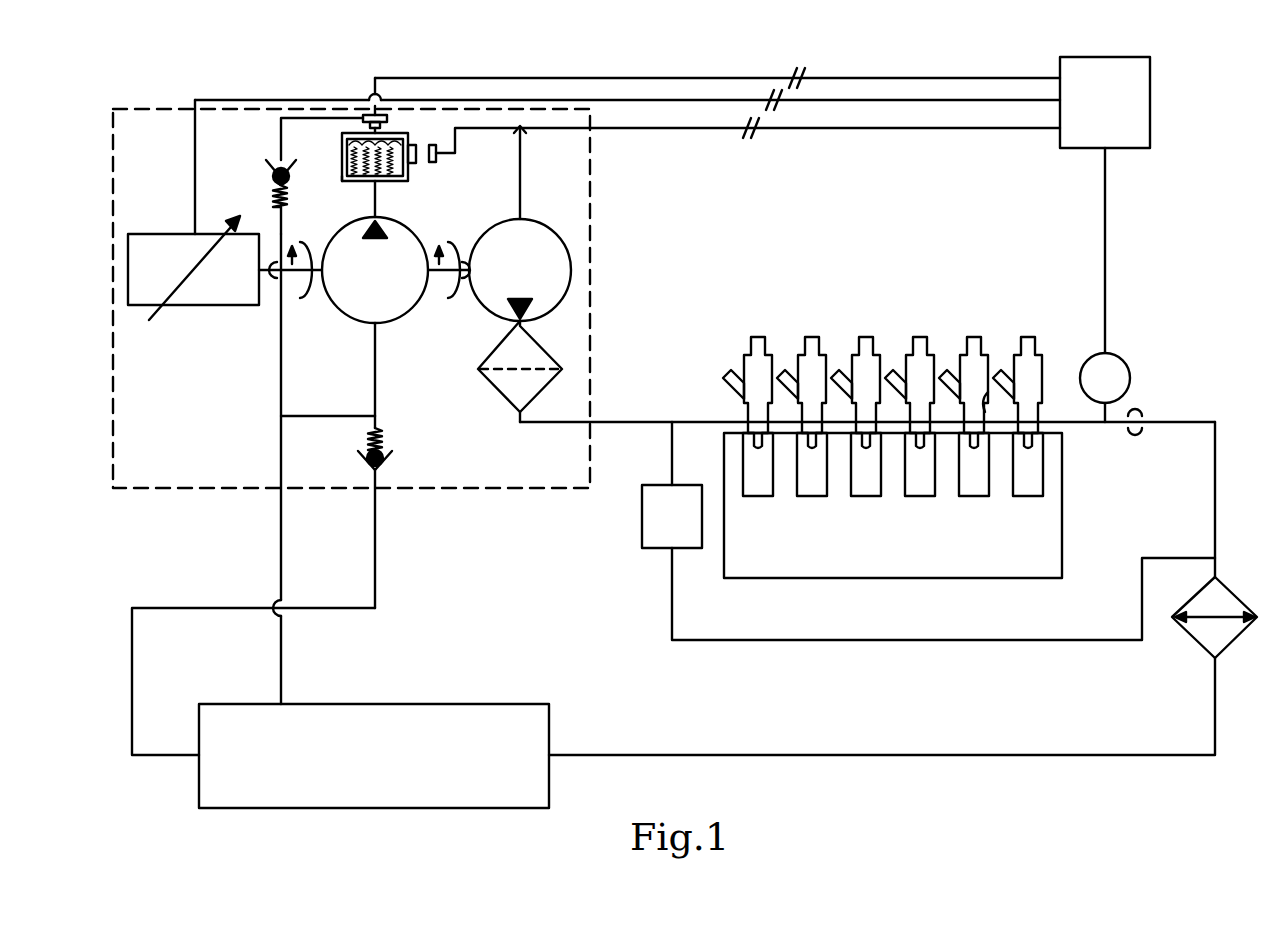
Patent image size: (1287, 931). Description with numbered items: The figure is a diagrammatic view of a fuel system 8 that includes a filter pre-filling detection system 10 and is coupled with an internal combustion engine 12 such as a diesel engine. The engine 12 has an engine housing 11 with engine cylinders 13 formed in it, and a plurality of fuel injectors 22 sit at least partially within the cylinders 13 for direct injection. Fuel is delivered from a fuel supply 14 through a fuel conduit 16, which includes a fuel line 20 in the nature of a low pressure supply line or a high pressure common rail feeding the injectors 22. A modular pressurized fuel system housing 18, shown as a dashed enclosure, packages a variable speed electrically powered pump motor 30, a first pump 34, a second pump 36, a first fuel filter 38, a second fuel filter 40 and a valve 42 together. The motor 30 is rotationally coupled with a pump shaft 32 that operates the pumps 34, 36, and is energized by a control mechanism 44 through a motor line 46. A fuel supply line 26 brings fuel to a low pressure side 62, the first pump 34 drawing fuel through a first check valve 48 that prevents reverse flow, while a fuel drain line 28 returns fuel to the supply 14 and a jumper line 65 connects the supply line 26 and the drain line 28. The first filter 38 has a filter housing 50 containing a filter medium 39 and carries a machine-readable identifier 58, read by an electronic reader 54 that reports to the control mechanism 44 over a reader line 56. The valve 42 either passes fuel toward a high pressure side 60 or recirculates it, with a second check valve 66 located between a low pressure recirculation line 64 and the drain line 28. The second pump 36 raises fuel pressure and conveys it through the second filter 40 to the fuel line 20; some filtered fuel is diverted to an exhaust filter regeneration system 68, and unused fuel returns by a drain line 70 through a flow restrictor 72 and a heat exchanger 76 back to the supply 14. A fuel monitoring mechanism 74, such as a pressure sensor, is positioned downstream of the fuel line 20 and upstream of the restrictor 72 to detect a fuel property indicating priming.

The fuel system 8 is at (960, 50).
The filter pre-filling detection system 10 is at (1160, 321).
The engine housing 11 is at (1062, 502).
The internal combustion engine 12 is at (730, 384).
The engine cylinders 13 is at (1045, 462).
The fuel supply 14 is at (490, 704).
The fuel conduit 16 is at (665, 410).
The modular pressurized fuel system housing 18 is at (112, 455).
The fuel line 20 is at (985, 412).
The fuel injectors 22 is at (805, 338).
The fuel supply line 26 is at (132, 672).
The fuel drain line 28 is at (281, 527).
The pump motor 30 is at (188, 305).
The pump shaft 32 is at (460, 282).
The first pump 34 is at (338, 305).
The second pump 36 is at (555, 228).
The first fuel filter 38 is at (342, 165).
The filter medium 39 is at (368, 181).
The second fuel filter 40 is at (545, 360).
The valve 42 is at (388, 120).
The control mechanism 44 is at (1151, 95).
The motor line 46 is at (680, 100).
The first check valve 48 is at (390, 460).
The filter housing 50 is at (342, 178).
The electronic reader 54 is at (440, 158).
The reader line 56 is at (705, 130).
The machine-readable identifier 58 is at (412, 163).
The high pressure side 60 is at (572, 338).
The low pressure side 62 is at (400, 332).
The low pressure recirculation line 64 is at (281, 120).
The jumper line 65 is at (328, 416).
The second check valve 66 is at (270, 168).
The exhaust filter regeneration system 68 is at (642, 527).
The drain line 70 is at (1215, 462).
The flow restrictor 72 is at (1140, 412).
The fuel monitoring mechanism 74 is at (1122, 362).
The heat exchanger 76 is at (1243, 610).